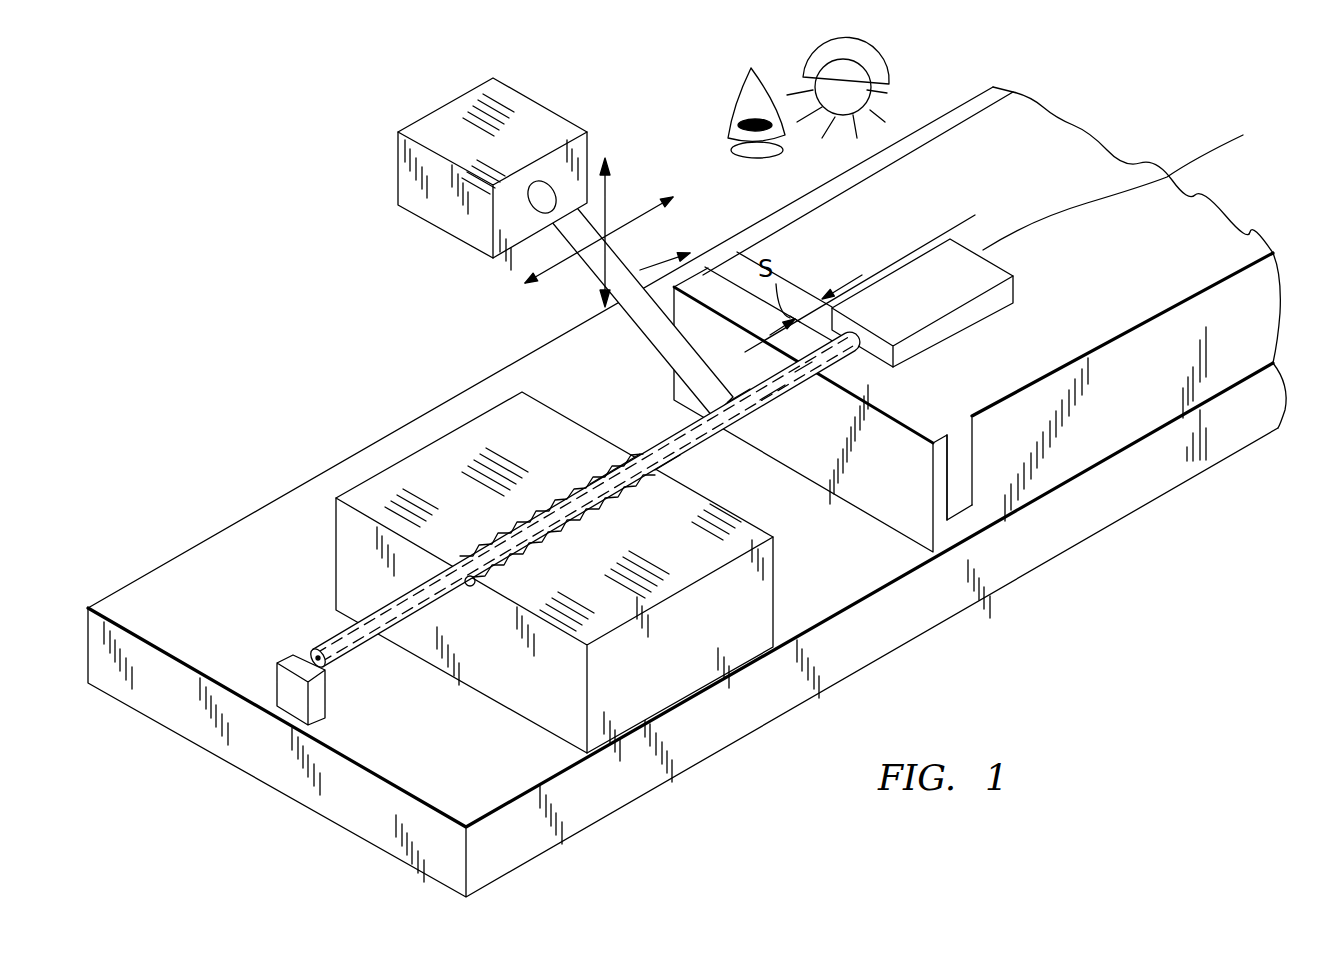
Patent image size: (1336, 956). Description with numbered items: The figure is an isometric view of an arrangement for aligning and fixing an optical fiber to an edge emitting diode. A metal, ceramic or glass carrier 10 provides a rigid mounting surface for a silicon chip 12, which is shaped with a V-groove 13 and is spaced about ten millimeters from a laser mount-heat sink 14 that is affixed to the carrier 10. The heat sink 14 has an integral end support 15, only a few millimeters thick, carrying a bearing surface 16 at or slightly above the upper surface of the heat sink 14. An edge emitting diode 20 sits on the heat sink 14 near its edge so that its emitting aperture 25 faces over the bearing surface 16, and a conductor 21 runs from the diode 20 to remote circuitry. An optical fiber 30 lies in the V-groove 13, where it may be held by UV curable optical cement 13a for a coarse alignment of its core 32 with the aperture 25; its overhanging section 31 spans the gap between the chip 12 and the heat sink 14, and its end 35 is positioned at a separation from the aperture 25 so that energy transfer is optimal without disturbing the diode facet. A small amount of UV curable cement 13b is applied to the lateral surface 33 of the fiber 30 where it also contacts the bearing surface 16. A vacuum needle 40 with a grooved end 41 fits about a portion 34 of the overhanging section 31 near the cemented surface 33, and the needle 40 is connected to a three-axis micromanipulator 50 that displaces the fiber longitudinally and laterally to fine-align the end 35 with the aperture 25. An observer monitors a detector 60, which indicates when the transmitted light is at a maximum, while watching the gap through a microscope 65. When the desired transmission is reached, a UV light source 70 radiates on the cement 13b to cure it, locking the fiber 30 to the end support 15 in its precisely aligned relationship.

The carrier 10 is at (1090, 517).
The silicon chip 12 is at (688, 645).
The V-groove 13 is at (471, 586).
The UV curable optical cement 13a is at (561, 528).
The UV curable cement 13b is at (818, 373).
The laser mount-heat sink 14 is at (1117, 412).
The end support 15 is at (940, 482).
The bearing surface 16 is at (923, 432).
The edge emitting diode 20 is at (931, 302).
The conductor 21 is at (1190, 158).
The emitting aperture 25 is at (870, 337).
The optical fiber 30 is at (613, 462).
The overhanging section 31 is at (668, 459).
The core 32 is at (577, 505).
The lateral surface 33 is at (768, 407).
The portion of extension 34 is at (740, 400).
The end 35 is at (853, 333).
The vacuum needle 40 is at (607, 230).
The grooved end 41 is at (735, 395).
The three-axis micromanipulator 50 is at (547, 108).
The detector 60 is at (325, 718).
The microscope 65 is at (733, 157).
The UV light source 70 is at (878, 63).